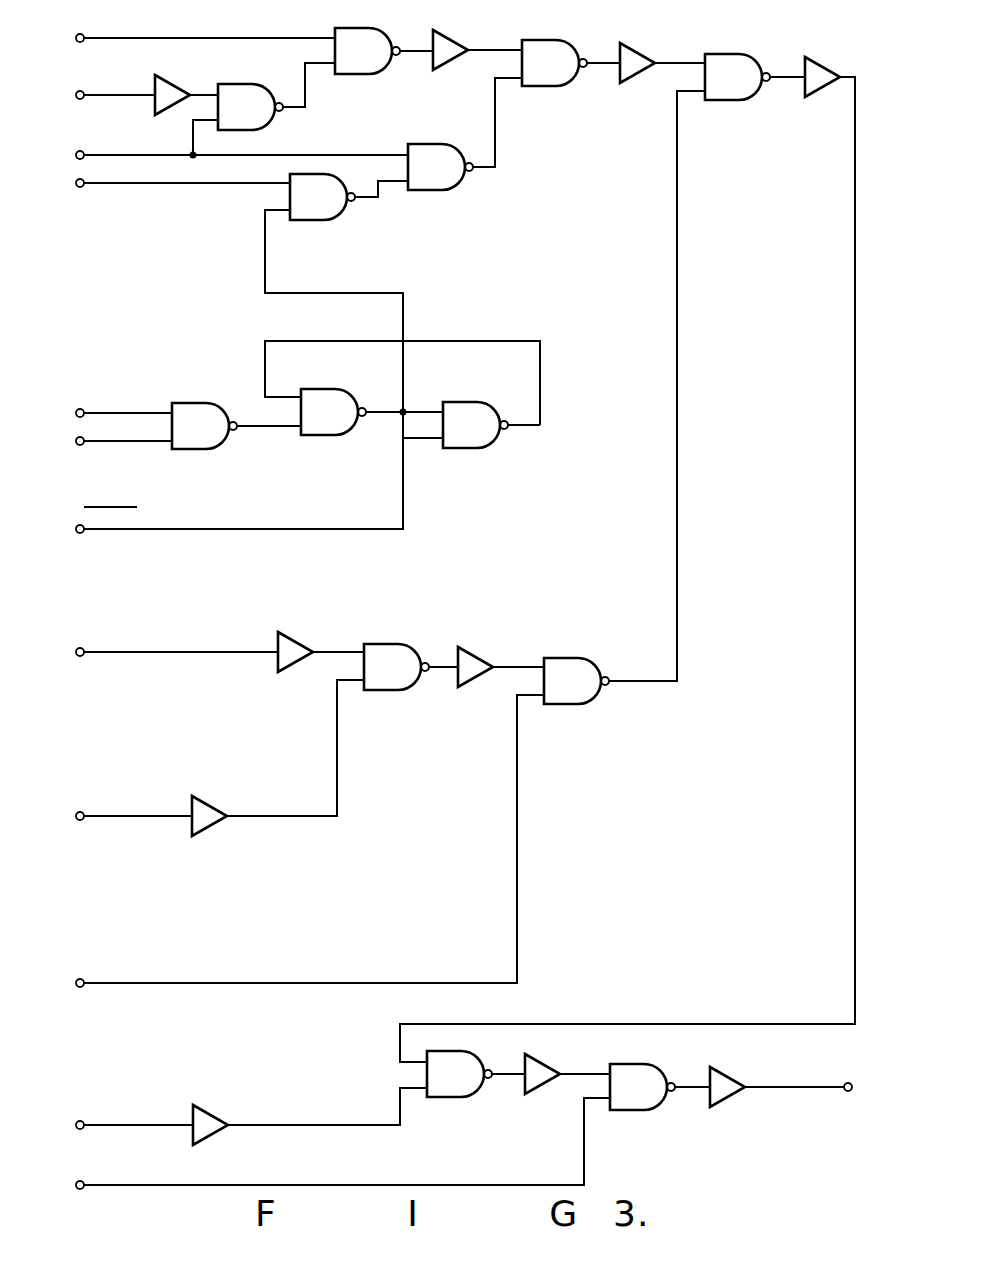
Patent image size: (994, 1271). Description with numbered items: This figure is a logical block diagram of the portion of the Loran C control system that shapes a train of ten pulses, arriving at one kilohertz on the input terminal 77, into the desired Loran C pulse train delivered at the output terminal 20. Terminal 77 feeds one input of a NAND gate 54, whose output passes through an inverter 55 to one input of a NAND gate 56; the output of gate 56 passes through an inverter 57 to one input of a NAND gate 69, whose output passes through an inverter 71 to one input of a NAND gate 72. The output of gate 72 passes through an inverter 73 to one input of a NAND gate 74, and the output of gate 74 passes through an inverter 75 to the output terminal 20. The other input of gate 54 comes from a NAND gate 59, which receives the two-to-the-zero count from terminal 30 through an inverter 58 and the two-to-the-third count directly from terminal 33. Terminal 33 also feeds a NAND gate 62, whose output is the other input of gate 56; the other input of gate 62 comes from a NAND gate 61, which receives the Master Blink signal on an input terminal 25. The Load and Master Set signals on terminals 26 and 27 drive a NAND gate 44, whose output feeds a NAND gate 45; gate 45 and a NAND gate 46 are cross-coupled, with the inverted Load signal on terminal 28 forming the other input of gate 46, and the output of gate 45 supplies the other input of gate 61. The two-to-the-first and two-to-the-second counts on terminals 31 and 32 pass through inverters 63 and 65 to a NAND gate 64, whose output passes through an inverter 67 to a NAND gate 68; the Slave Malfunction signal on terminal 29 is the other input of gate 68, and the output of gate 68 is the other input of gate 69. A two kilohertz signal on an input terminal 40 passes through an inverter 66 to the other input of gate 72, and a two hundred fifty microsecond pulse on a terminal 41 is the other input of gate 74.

The input terminal 77 is at (77, 35).
The terminal 30 is at (77, 93).
The terminal 33 is at (77, 153).
The input terminal 25 is at (77, 181).
The terminal 26 is at (77, 411).
The terminal 27 is at (77, 439).
The terminal 28 is at (77, 527).
The terminal 31 is at (77, 650).
The terminal 32 is at (77, 814).
The terminal 29 is at (77, 981).
The input terminal 40 is at (77, 1123).
The terminal 41 is at (77, 1183).
The output terminal 20 is at (844, 1086).
The NAND gate 54 is at (362, 38).
The inverter 55 is at (440, 48).
The NAND gate 56 is at (550, 50).
The inverter 57 is at (630, 60).
The inverter 58 is at (166, 90).
The NAND gate 59 is at (252, 96).
The NAND gate 61 is at (321, 187).
The NAND gate 62 is at (438, 154).
The NAND gate 69 is at (733, 66).
The inverter 71 is at (816, 72).
The NAND gate 44 is at (195, 416).
The NAND gate 45 is at (328, 398).
The NAND gate 46 is at (468, 412).
The inverter 63 is at (288, 648).
The NAND gate 64 is at (398, 656).
The inverter 65 is at (202, 810).
The inverter 67 is at (468, 664).
The NAND gate 68 is at (568, 668).
The inverter 66 is at (202, 1120).
The NAND gate 72 is at (466, 1060).
The inverter 73 is at (536, 1072).
The NAND gate 74 is at (648, 1074).
The inverter 75 is at (720, 1084).